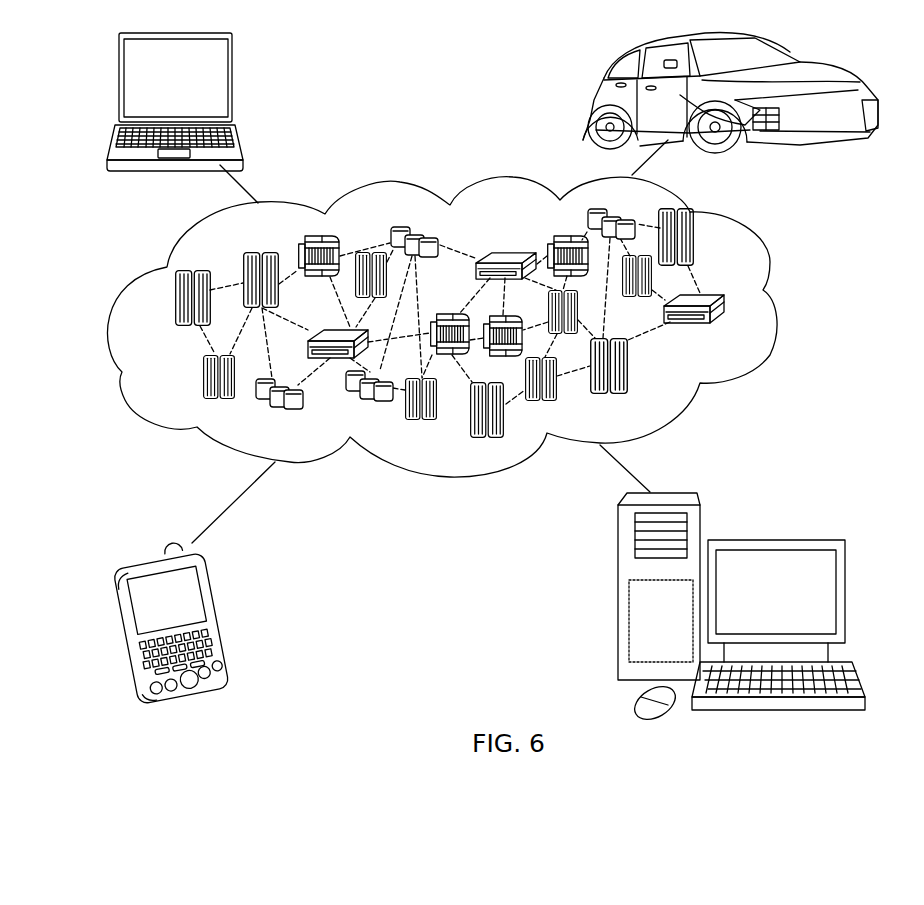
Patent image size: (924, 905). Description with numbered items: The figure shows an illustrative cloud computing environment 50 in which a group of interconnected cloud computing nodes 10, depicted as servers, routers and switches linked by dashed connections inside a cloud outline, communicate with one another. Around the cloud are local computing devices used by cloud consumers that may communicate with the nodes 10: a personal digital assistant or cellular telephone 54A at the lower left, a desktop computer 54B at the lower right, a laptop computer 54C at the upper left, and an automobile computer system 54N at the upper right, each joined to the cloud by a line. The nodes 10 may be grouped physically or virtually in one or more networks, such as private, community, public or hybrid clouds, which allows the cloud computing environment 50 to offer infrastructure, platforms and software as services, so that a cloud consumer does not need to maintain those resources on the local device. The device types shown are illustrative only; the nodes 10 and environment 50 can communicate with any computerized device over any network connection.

The laptop computer 54C is at (232, 83).
The automobile computer system 54N is at (592, 98).
The personal digital assistant or cellular telephone 54A is at (222, 617).
The desktop computer 54B is at (773, 538).
The cloud computing environment 50 is at (777, 305).
The cloud computing node 10 is at (724, 331).